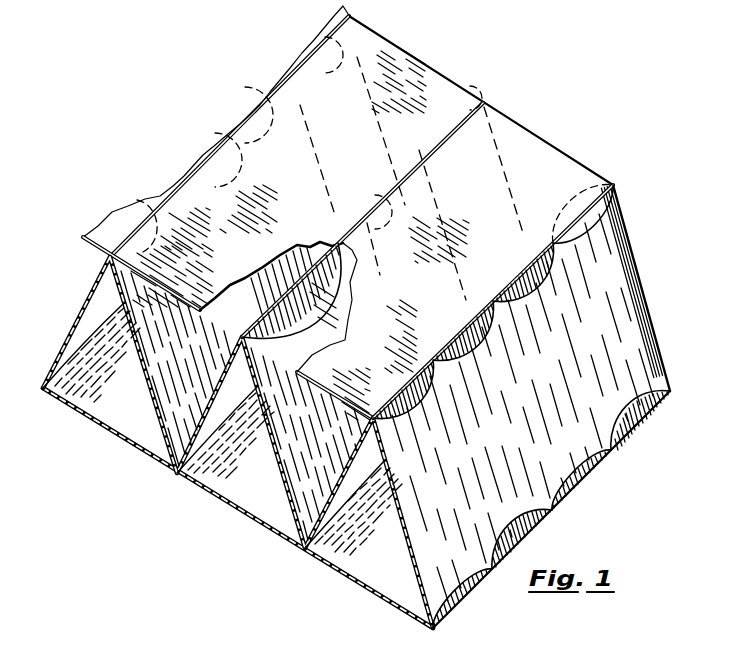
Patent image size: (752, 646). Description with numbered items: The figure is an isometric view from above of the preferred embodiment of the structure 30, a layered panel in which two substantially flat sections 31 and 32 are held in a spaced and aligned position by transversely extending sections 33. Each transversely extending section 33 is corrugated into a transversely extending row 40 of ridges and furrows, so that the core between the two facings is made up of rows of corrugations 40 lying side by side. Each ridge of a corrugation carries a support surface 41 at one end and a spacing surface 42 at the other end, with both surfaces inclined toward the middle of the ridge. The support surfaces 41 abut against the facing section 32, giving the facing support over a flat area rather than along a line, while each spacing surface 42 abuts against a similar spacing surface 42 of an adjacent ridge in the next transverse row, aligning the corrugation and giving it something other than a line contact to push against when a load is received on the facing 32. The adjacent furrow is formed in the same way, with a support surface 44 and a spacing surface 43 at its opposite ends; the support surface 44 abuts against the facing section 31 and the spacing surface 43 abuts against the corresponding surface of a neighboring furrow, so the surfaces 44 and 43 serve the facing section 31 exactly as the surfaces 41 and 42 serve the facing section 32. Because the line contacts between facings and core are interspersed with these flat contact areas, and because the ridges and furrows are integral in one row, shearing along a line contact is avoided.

The structure 30 is at (552, 135).
The flat section 31 is at (82, 243).
The flat section 32 is at (88, 422).
The transversely extending section 33 is at (89, 297).
The row of corrugations 40 is at (575, 436).
The support surface 41 is at (170, 445).
The spacing surface 42 is at (246, 88).
The spacing surface 43 is at (108, 318).
The support surface 44 is at (352, 16).